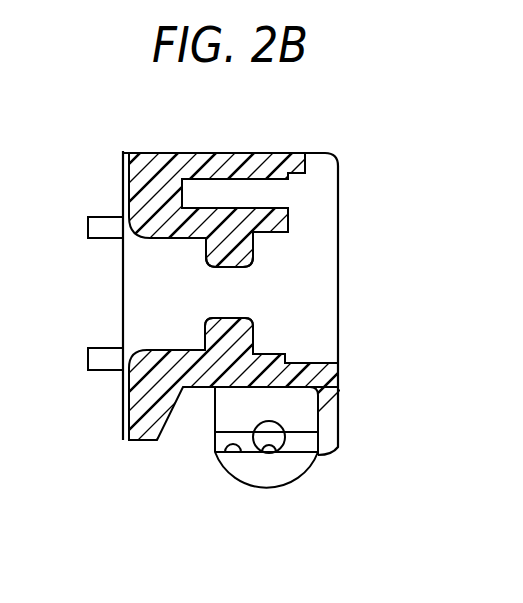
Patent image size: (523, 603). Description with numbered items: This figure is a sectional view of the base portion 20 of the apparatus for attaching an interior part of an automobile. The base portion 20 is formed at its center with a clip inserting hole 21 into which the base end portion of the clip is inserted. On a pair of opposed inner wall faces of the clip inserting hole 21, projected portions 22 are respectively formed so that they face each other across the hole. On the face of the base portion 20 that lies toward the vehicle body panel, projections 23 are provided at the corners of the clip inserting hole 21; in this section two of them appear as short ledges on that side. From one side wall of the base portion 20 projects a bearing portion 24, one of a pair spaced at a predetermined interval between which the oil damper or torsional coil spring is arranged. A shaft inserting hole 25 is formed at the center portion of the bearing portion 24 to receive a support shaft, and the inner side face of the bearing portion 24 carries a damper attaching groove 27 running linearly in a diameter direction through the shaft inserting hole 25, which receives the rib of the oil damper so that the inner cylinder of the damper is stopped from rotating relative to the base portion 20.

The base portion 20 is at (366, 172).
The clip inserting hole 21 is at (249, 296).
The projected portions 22 is at (243, 268).
The projections 23 is at (62, 415).
The bearing portions 24 is at (307, 478).
The shaft inserting hole 25 is at (275, 455).
The damper attaching groove 27 is at (236, 450).